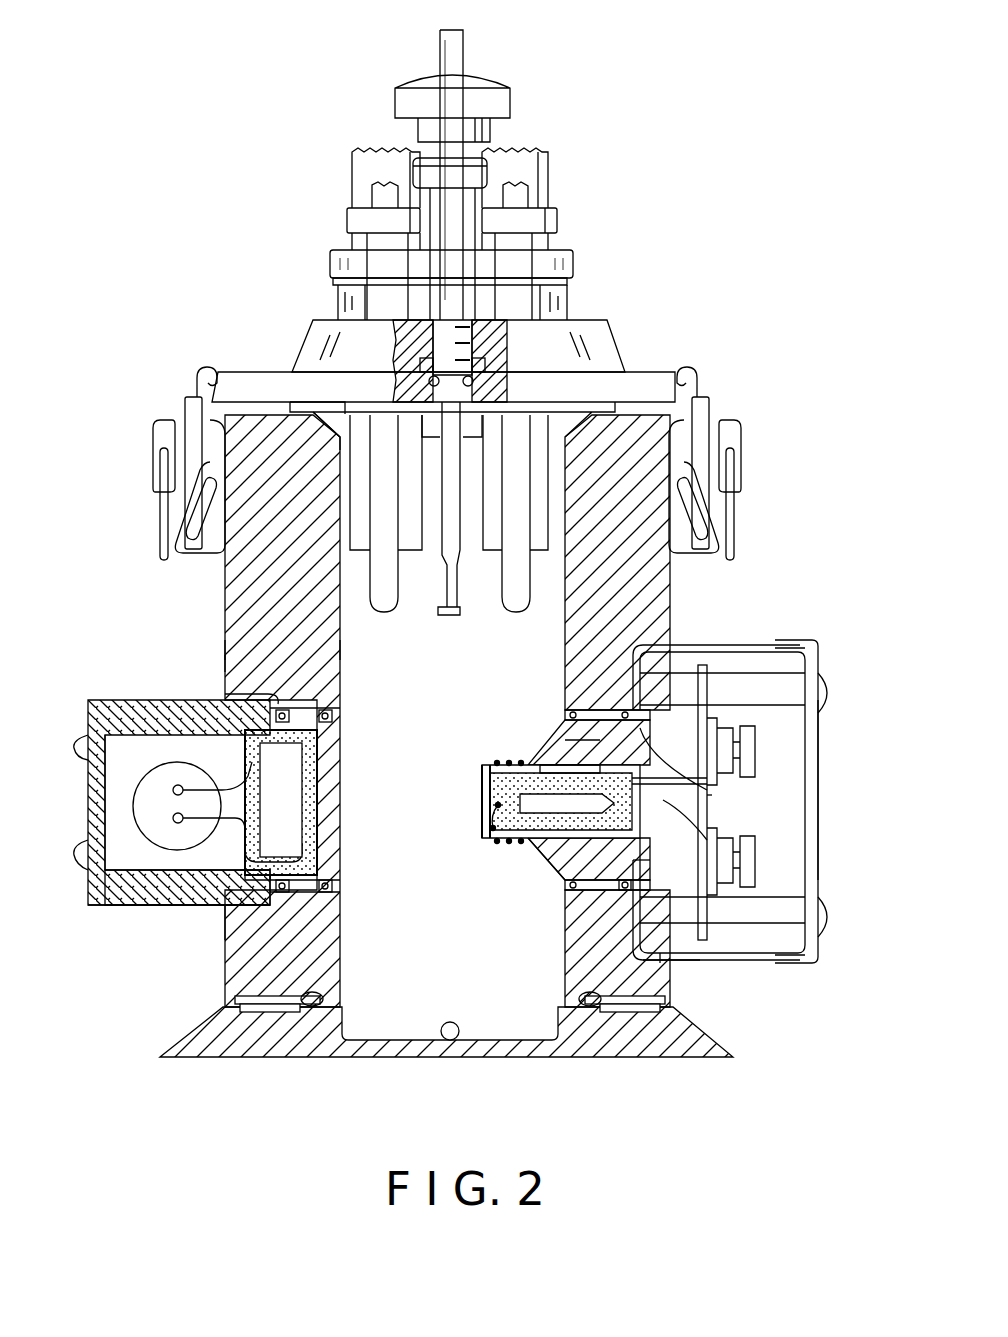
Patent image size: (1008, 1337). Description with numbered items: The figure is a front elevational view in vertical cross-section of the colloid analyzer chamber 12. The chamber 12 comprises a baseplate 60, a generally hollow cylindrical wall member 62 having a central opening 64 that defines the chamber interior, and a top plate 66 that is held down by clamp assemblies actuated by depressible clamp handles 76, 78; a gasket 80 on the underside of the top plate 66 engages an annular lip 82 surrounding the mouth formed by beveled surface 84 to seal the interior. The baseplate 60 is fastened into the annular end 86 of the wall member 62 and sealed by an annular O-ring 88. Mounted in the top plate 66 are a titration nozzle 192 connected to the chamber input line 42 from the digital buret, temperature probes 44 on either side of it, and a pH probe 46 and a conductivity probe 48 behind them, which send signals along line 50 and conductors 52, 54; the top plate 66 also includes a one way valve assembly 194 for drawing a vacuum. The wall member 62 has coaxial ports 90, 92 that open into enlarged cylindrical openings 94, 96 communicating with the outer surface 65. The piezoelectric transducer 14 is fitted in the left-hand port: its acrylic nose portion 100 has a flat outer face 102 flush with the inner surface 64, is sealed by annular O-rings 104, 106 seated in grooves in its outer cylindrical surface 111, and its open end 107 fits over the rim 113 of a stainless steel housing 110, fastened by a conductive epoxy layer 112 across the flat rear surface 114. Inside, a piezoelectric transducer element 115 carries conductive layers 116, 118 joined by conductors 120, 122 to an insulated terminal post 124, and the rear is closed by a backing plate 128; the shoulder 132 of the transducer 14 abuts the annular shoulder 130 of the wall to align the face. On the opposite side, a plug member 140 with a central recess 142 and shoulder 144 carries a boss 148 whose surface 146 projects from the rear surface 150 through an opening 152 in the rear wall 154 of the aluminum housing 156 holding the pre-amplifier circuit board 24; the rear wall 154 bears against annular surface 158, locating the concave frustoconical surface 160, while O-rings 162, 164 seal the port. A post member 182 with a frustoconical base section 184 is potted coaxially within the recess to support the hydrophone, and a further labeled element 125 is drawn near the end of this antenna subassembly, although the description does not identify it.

The chamber 12 is at (208, 620).
The piezoelectric transducer 14 is at (112, 913).
The pre-amplifier circuit board 24 is at (690, 806).
The chamber input line 42 is at (630, 8).
The temperature probes 44 is at (383, 598).
The pH probe 46 is at (540, 150).
The conductivity probe 48 is at (360, 170).
The line 50 is at (517, 197).
The conductor 52 is at (522, 150).
The conductor 54 is at (383, 150).
The baseplate 60 is at (725, 1050).
The wall member 62 is at (236, 646).
The central opening 64 is at (345, 652).
The outer surface 65 is at (232, 662).
The top plate 66 is at (660, 378).
The clamp handle 76 is at (745, 525).
The clamp handle 78 is at (160, 525).
The gasket 80 is at (340, 437).
The annular lip 82 is at (592, 414).
The beveled surface 84 is at (343, 418).
The annular end 86 is at (262, 1006).
The annular O-ring 88 is at (592, 1006).
The port 90 is at (318, 870).
The port 92 is at (565, 882).
The enlarged cylindrical opening 94 is at (238, 906).
The enlarged cylindrical opening 96 is at (672, 962).
The nose portion 100 is at (326, 762).
The flat outer face 102 is at (322, 811).
The annular O-ring 104 is at (334, 716).
The annular O-ring 106 is at (324, 706).
The open end 107 is at (240, 878).
The stainless steel housing 110 is at (158, 893).
The outer cylindrical surface 111 is at (328, 894).
The conductive epoxy adhesive layer 112 is at (318, 832).
The rim 113 is at (240, 762).
The flat rear surface 114 is at (321, 791).
The piezoelectric transducer element 115 is at (267, 813).
The conductive layer 116 is at (320, 743).
The conductive layer 118 is at (268, 886).
The conductor 120 is at (173, 820).
The conductor 122 is at (187, 778).
The insulated terminal post 124 is at (140, 796).
The probe end wall 125 is at (500, 832).
The backing plate 128 is at (88, 826).
The annular shoulder 130 is at (262, 922).
The shoulder 132 is at (265, 683).
The plug member 140 is at (560, 718).
The central recess 142 is at (540, 763).
The shoulder 144 is at (600, 762).
The surface 146 is at (640, 842).
The boss 148 is at (630, 888).
The rear surface 150 is at (655, 946).
The opening 152 is at (715, 802).
The rear wall 154 is at (655, 690).
The housing 156 is at (824, 746).
The annular surface 158 is at (668, 646).
The frustoconical surface 160 is at (545, 860).
The O-ring 162 is at (547, 738).
The O-ring 164 is at (623, 892).
The post member 182 is at (496, 766).
The frustoconical base section 184 is at (488, 776).
The titration nozzle 192 is at (447, 545).
The one way valve assembly 194 is at (468, 330).